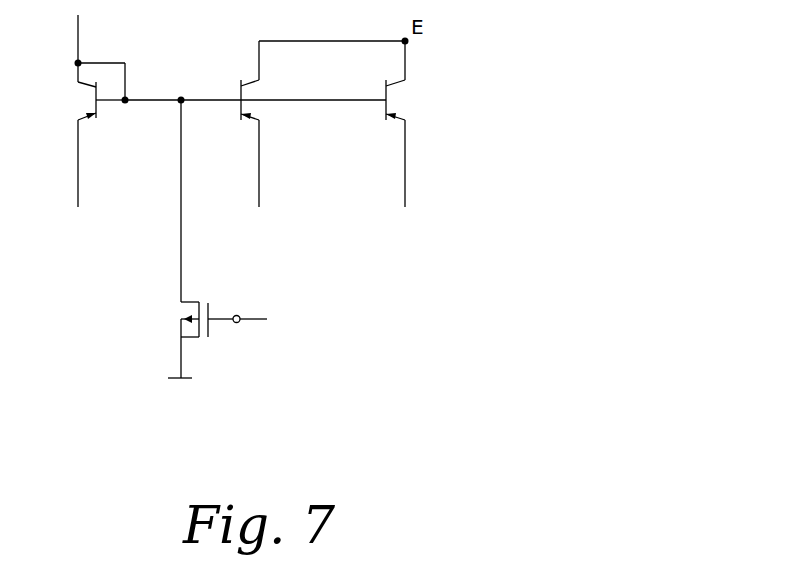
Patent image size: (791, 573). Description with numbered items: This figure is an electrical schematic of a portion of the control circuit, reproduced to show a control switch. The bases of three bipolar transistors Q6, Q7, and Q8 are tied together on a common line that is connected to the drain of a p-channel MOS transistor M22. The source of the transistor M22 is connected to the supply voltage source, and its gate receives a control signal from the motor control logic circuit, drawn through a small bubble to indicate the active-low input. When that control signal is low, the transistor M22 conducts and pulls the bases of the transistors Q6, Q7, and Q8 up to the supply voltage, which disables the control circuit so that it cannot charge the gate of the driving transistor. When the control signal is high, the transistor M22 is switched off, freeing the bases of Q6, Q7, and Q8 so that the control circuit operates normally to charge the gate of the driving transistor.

The transistor Q6 is at (76, 85).
The transistor Q7 is at (244, 106).
The transistor Q8 is at (392, 86).
The p-channel MOS transistor M22 is at (184, 300).